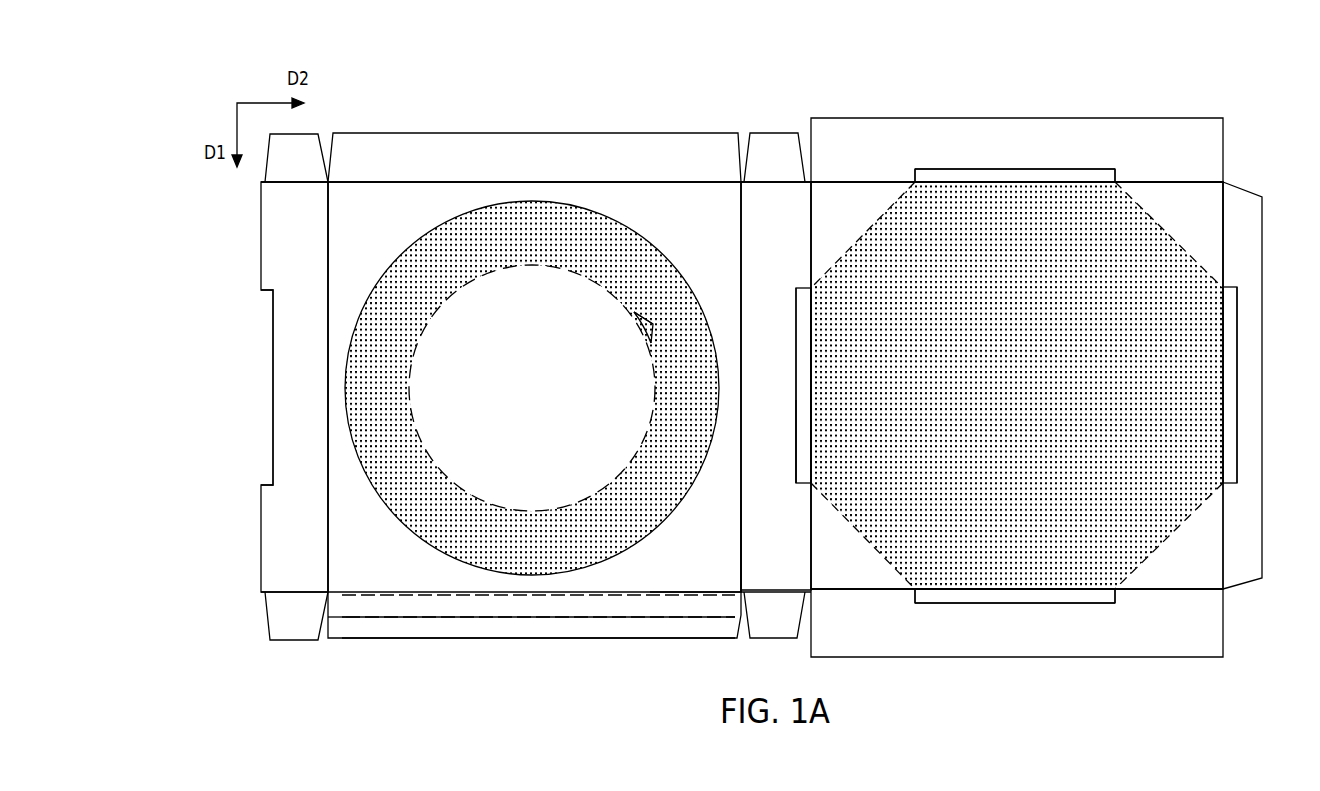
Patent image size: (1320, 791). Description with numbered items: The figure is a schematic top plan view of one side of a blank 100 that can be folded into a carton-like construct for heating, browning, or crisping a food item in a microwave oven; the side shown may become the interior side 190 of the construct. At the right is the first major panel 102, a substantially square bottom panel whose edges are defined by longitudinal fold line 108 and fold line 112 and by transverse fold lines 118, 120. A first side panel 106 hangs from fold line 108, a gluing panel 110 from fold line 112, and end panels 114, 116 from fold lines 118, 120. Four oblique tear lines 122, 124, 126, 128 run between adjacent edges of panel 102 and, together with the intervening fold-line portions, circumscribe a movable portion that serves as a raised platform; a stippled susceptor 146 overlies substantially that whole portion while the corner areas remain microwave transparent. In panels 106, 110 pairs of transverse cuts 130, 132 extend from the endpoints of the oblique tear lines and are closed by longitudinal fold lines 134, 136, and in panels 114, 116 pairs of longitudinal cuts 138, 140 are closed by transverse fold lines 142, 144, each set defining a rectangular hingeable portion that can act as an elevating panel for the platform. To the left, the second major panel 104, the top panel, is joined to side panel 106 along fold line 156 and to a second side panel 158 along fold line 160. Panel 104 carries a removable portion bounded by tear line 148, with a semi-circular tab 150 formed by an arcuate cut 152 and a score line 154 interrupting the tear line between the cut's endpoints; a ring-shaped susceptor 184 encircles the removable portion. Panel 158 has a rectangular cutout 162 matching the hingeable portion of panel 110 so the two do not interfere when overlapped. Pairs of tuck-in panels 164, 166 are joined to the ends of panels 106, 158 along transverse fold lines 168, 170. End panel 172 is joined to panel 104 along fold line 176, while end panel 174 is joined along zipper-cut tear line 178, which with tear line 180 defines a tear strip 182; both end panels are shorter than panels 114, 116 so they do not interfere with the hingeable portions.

The blank 100 is at (1240, 73).
The first major panel 102 is at (847, 206).
The second major panel 104 is at (687, 216).
The first side panel 106 is at (755, 395).
The fold line 108 is at (810, 266).
The gluing panel 110 is at (1231, 218).
The fold line 112 is at (1227, 269).
The end panel 114 is at (831, 147).
The end panel 116 is at (831, 645).
The fold line 118 is at (1163, 181).
The fold line 120 is at (1166, 592).
The tear line 122 is at (843, 255).
The tear line 124 is at (1194, 257).
The tear line 126 is at (879, 556).
The tear line 128 is at (1153, 556).
The transverse lines of disruption 130 is at (800, 288).
The transverse lines of disruption 132 is at (1236, 287).
The longitudinal line of disruption 134 is at (797, 460).
The longitudinal line of disruption 136 is at (1241, 355).
The longitudinal lines of disruption 138 is at (915, 180).
The longitudinal lines of disruption 140 is at (916, 592).
The transverse line of disruption 142 is at (1007, 170).
The transverse line of disruption 144 is at (1016, 601).
The microwave energy interactive element 146 is at (1140, 228).
The tear line 148 is at (448, 472).
The tab 150 is at (653, 327).
The cut 152 is at (639, 313).
The score line 154 is at (646, 332).
The fold line 156 is at (740, 535).
The second side panel 158 is at (288, 431).
The fold line 160 is at (329, 237).
The cutout 162 is at (251, 370).
The tuck-in panels 164 is at (760, 163).
The tuck-in panels 166 is at (278, 166).
The transverse fold lines 168 is at (745, 186).
The transverse fold lines 170 is at (275, 186).
The end panel 172 is at (512, 163).
The end panel 174 is at (698, 636).
The transverse fold line 176 is at (347, 186).
The tear line 178 is at (354, 595).
The tear line 180 is at (354, 618).
The tear strip 182 is at (593, 608).
The microwave energy interactive element 184 is at (671, 273).
The interior side 190 is at (653, 570).